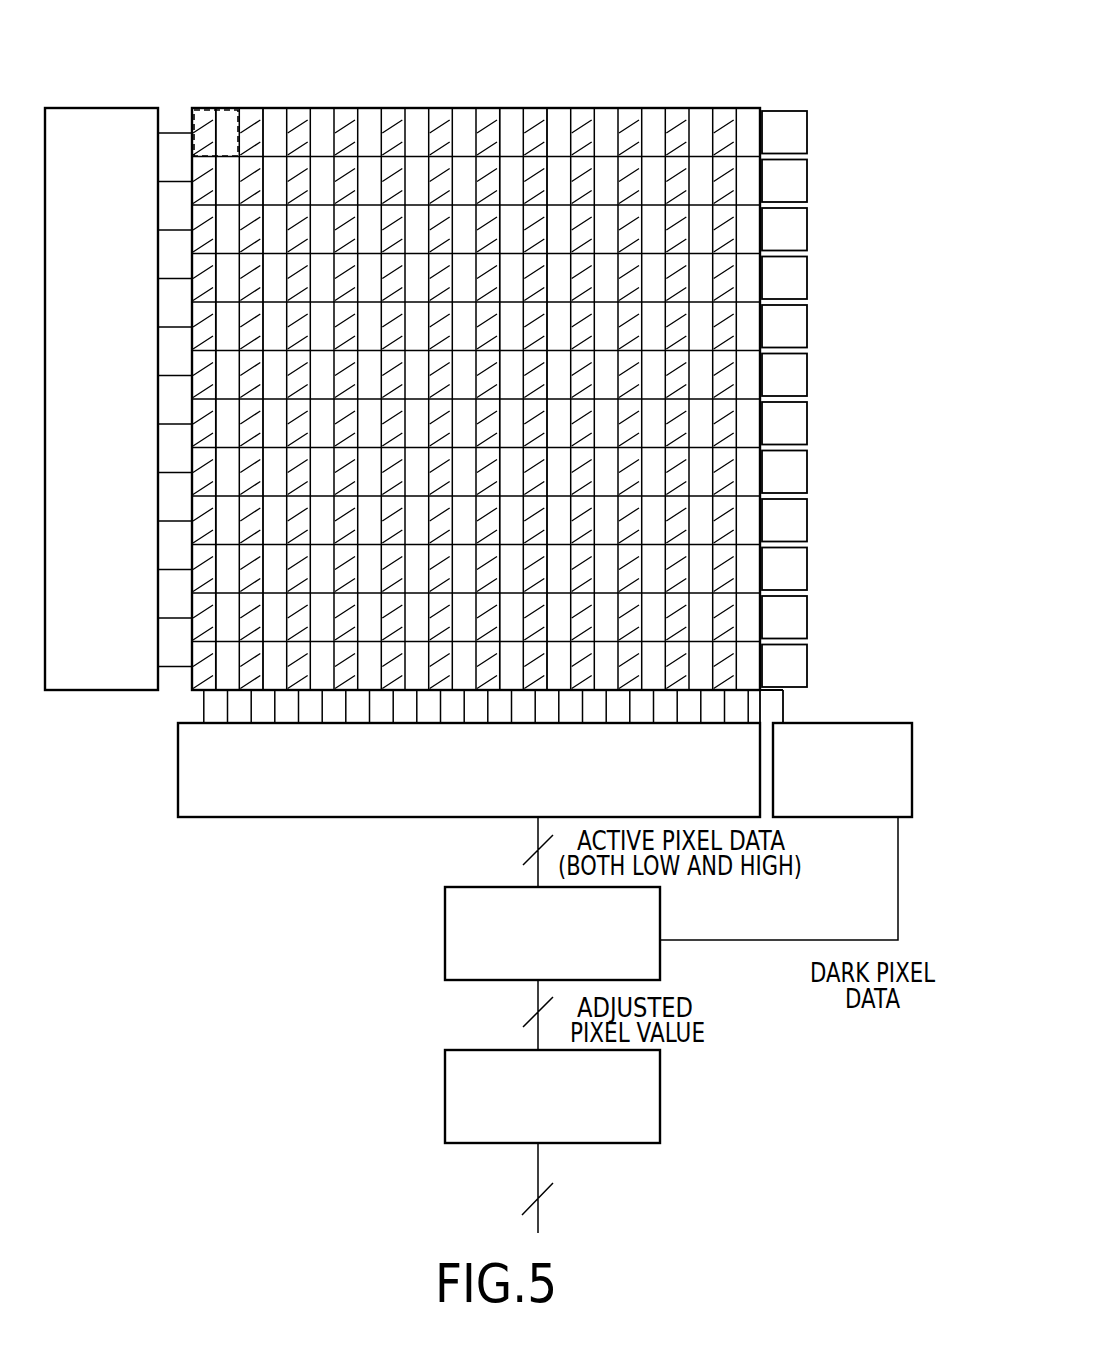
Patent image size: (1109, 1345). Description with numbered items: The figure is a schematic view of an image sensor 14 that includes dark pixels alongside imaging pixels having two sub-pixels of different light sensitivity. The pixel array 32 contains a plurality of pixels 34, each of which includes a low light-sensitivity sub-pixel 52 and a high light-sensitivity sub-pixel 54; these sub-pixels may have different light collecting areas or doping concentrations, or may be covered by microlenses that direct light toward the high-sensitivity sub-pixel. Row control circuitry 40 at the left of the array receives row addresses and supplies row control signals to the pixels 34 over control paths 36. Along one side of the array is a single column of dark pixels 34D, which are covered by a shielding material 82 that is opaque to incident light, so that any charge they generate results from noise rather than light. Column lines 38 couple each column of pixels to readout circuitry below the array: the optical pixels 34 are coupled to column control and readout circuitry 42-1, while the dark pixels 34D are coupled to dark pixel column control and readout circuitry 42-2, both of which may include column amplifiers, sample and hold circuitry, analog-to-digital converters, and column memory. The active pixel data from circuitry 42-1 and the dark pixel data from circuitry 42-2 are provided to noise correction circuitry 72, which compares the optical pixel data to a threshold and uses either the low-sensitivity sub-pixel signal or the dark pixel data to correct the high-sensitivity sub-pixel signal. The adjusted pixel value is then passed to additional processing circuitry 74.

The image sensor 14 is at (832, 85).
The pixel array 32 is at (708, 85).
The image pixel 34 is at (233, 108).
The dark pixel 34D is at (795, 180).
The control path 36 is at (170, 133).
The column line 38 is at (203, 703).
The row control circuitry 40 is at (80, 122).
The column control and readout circuitry 42-1 is at (177, 773).
The dark pixel column control and readout circuitry 42-2 is at (912, 755).
The low light-sensitivity sub-pixel 52 is at (297, 120).
The high light-sensitivity sub-pixel 54 is at (320, 123).
The noise correction circuitry 72 is at (661, 915).
The additional processing circuitry 74 is at (661, 1095).
The shielding material 82 is at (807, 270).